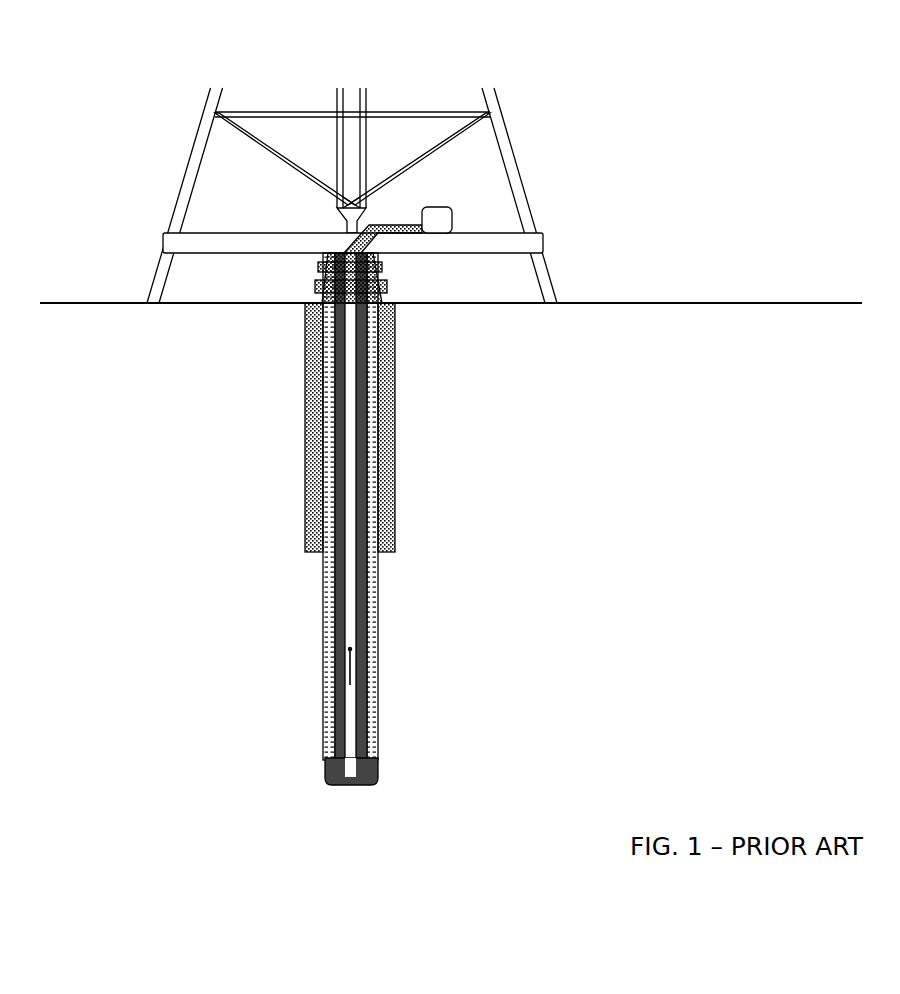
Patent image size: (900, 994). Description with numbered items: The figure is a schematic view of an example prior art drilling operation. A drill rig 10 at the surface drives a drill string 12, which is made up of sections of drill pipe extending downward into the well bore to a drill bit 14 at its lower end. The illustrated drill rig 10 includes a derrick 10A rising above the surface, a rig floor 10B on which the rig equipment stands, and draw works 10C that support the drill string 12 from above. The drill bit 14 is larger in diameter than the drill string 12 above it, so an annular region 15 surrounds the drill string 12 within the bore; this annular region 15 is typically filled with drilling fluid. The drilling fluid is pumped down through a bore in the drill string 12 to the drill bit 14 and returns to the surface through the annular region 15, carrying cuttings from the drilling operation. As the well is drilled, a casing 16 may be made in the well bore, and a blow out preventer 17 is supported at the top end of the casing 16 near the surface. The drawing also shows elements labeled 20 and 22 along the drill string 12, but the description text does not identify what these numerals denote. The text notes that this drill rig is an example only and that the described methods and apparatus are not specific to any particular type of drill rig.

The drill rig 10 is at (95, 168).
The derrick 10A is at (492, 133).
The rig floor 10B is at (182, 243).
The draw works 10C is at (347, 220).
The drill string 12 is at (337, 610).
The drill bit 14 is at (328, 770).
The annular region 15 is at (330, 568).
The casing 16 is at (313, 492).
The blow out preventer 17 is at (317, 290).
The tubing string 20 is at (363, 738).
The sensor 22 is at (351, 648).